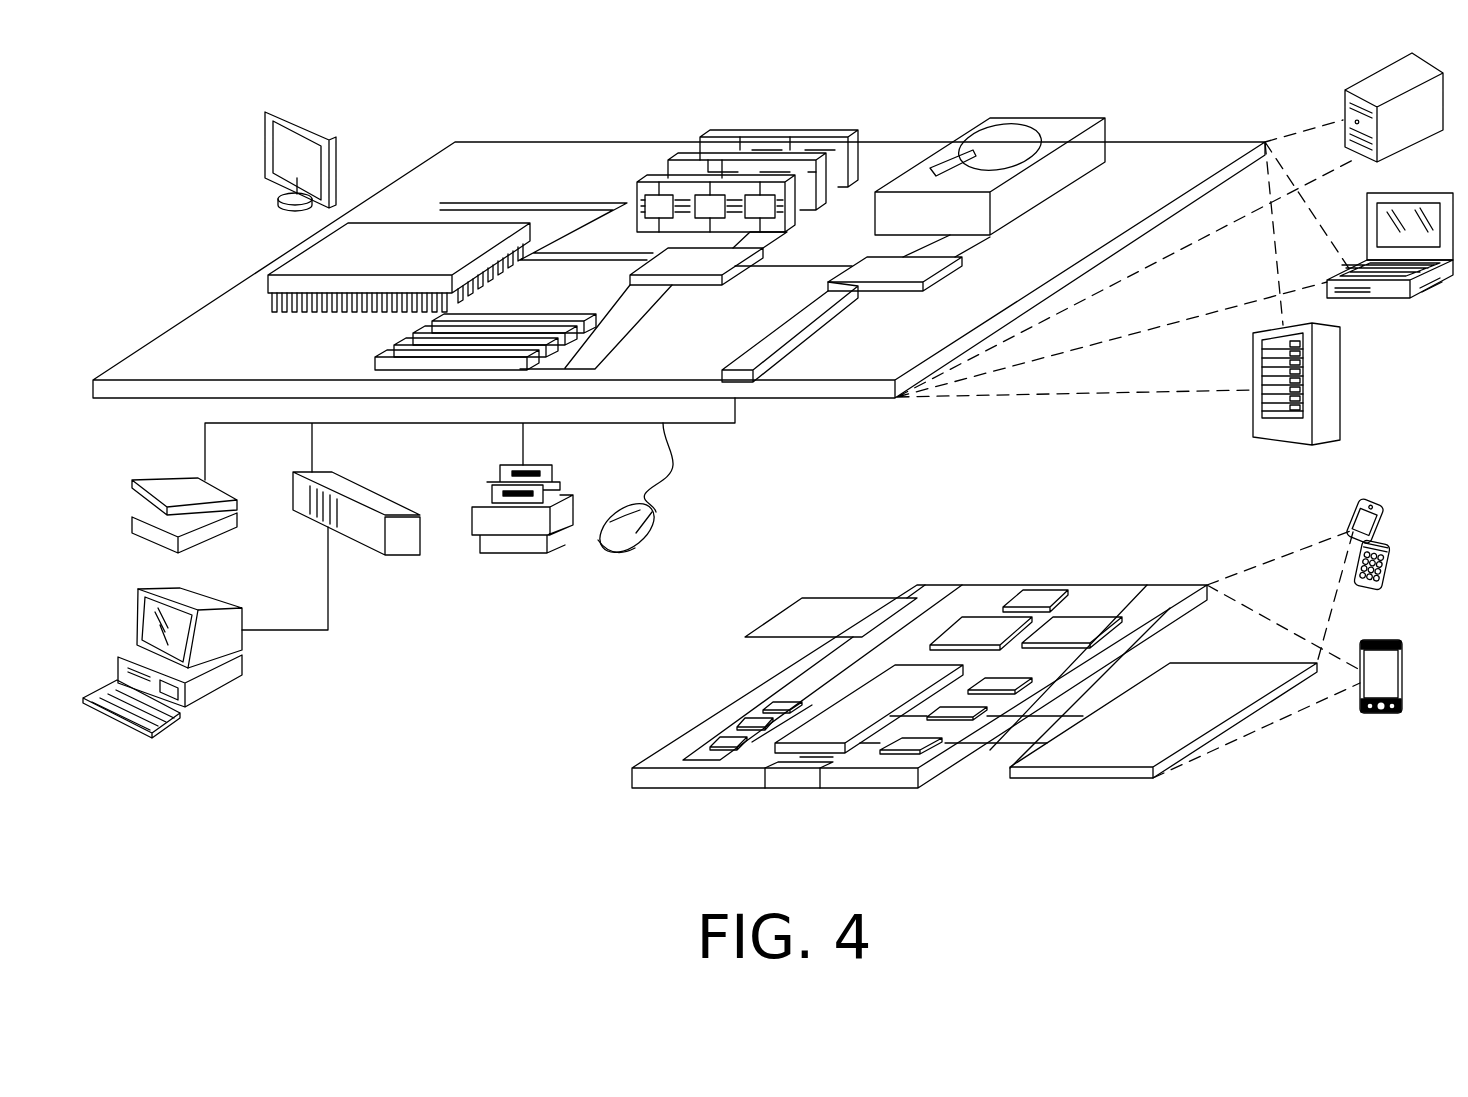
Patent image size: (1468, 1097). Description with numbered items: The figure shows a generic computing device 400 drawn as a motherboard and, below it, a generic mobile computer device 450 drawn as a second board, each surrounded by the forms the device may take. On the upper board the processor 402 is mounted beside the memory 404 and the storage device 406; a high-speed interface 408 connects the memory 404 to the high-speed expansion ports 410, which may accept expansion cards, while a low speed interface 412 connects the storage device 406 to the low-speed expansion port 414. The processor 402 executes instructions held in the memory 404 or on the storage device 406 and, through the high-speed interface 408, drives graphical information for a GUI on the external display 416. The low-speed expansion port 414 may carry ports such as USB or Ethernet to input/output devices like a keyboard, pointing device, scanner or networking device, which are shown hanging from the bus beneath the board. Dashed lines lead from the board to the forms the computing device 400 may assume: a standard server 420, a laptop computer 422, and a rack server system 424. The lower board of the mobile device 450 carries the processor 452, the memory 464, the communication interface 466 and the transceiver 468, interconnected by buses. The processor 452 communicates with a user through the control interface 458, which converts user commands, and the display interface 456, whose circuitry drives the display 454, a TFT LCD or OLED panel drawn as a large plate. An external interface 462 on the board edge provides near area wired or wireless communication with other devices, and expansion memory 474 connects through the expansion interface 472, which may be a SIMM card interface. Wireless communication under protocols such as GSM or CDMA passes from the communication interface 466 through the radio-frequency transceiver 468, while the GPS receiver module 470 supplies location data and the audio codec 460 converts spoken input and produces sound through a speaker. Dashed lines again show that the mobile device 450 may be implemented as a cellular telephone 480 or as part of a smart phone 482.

The computing device 400 is at (412, 84).
The processor 402 is at (296, 256).
The memory 404 is at (786, 135).
The storage device 406 is at (1038, 114).
The high-speed interface 408 is at (712, 258).
The high-speed expansion ports 410 is at (404, 337).
The low speed interface 412 is at (864, 263).
The low-speed expansion port 414 is at (744, 365).
The display 416 is at (272, 108).
The standard server 420 is at (1367, 83).
The laptop computer 422 is at (1427, 195).
The rack server system 424 is at (1340, 382).
The mobile computer device 450 is at (1250, 792).
The processor 452 is at (838, 712).
The display 454 is at (1205, 680).
The display interface 456 is at (920, 742).
The control interface 458 is at (965, 712).
The audio codec 460 is at (1005, 680).
The external interface 462 is at (795, 770).
The memory 464 is at (742, 725).
The communication interface 466 is at (978, 620).
The transceiver 468 is at (1080, 623).
The GPS receiver module 470 is at (1033, 597).
The expansion interface 472 is at (900, 597).
The expansion memory 474 is at (807, 597).
The cellular telephone 480 is at (1362, 500).
The smart phone 482 is at (1372, 640).